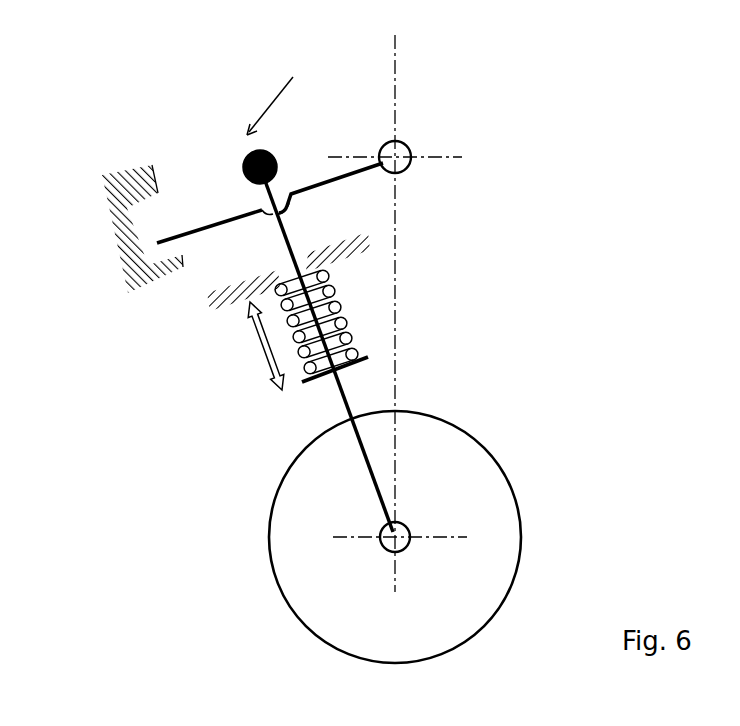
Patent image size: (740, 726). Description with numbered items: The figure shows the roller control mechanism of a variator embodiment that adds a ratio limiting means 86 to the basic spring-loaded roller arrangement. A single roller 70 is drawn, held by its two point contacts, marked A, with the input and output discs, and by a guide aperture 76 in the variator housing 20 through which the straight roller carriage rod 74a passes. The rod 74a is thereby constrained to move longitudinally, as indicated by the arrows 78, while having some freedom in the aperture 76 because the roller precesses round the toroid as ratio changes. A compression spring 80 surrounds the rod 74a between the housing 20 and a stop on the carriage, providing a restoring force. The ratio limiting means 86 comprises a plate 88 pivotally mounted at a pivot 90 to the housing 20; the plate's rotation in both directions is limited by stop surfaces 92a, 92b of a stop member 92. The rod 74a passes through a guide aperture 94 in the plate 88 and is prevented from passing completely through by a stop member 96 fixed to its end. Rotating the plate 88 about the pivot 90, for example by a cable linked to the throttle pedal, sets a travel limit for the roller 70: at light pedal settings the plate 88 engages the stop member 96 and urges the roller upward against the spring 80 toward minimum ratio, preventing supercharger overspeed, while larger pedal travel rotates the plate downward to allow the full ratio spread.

The housing 20 is at (362, 240).
The roller 70 is at (502, 527).
The straight section of roller carriage 74a is at (252, 210).
The guide aperture 76 is at (287, 263).
The arrows 78 is at (253, 343).
The compression spring 80 is at (345, 327).
The ratio limiting means 86 is at (283, 95).
The plate 88 is at (312, 183).
The pivot 90 is at (408, 150).
The stop member 92 is at (95, 184).
The stop surface 92a is at (152, 203).
The stop surface 92b is at (180, 252).
The guide aperture 94 is at (285, 216).
The stop member 96 is at (243, 166).